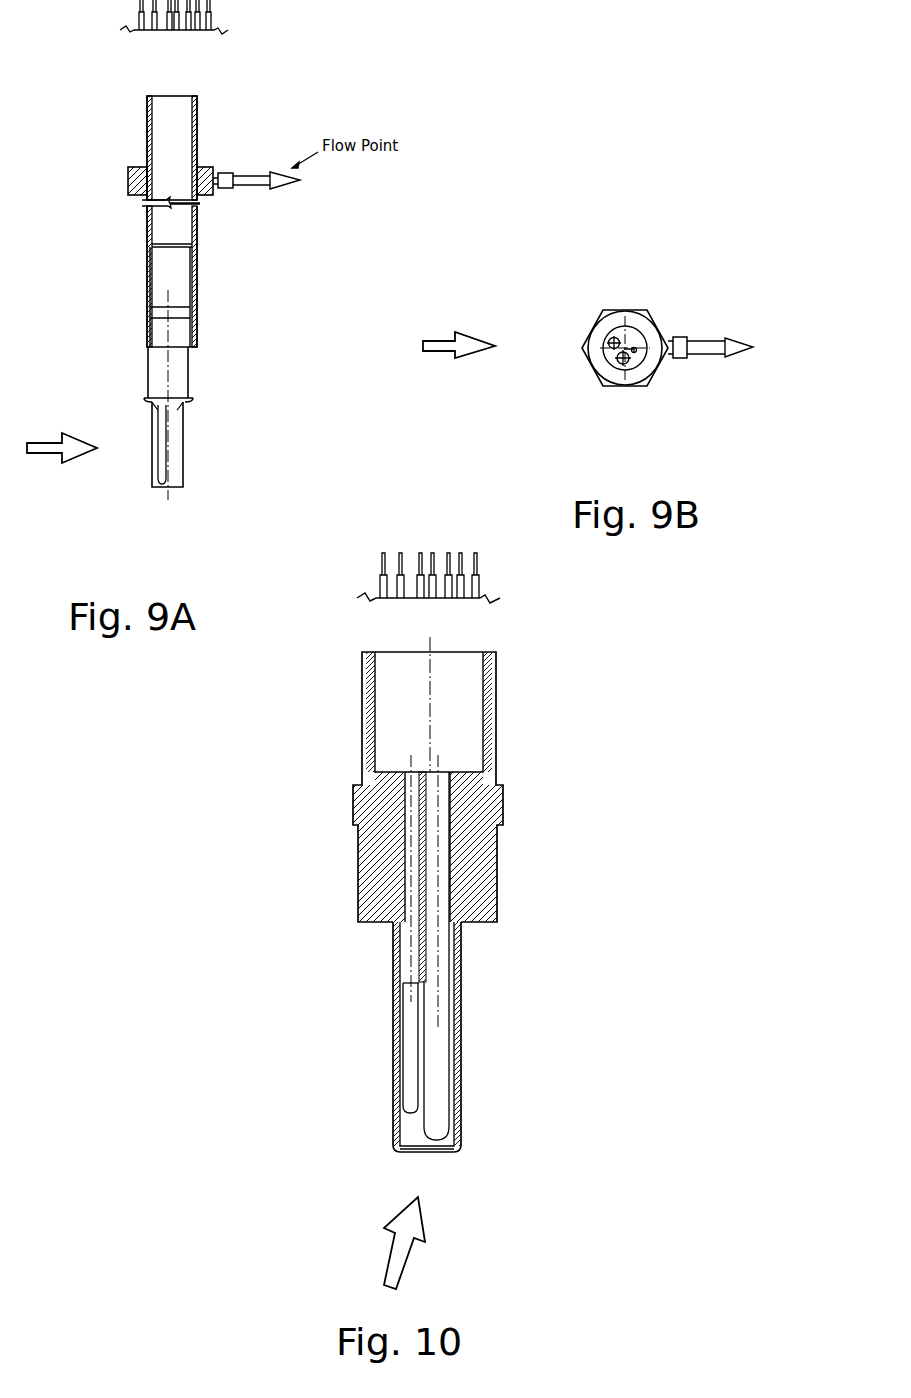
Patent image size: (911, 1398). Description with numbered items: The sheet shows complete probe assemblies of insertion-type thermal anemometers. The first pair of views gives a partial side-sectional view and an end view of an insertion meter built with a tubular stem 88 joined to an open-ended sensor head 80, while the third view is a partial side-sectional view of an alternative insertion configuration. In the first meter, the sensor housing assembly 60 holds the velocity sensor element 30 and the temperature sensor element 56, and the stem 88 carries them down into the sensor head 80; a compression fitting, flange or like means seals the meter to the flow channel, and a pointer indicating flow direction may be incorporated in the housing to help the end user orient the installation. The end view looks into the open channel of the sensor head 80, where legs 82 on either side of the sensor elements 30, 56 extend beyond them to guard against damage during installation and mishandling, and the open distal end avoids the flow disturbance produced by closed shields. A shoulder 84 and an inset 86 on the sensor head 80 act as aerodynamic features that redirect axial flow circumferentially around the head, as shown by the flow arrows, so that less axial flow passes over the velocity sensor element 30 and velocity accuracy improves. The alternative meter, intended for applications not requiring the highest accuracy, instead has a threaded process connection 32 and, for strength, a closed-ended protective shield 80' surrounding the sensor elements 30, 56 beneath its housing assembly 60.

In FIG. 9A, the tubular stem 88 is at (197, 224).
In FIG. 9A, the sensor housing assembly 60 is at (196, 291).
In FIG. 10, the sensor housing assembly 60 is at (470, 722).
In FIG. 9A, the inset 86 is at (148, 370).
In FIG. 9A, the shoulder 84 is at (143, 398).
In FIG. 9A, the velocity sensor element 30 is at (160, 437).
In FIG. 9B, the velocity sensor element 30 is at (610, 341).
In FIG. 10, the velocity sensor element 30 is at (449, 1078).
In FIG. 9A, the sensor head 80 is at (201, 444).
In FIG. 9B, the sensor head 80 is at (667, 328).
In FIG. 9B, the legs 82 is at (628, 327).
In FIG. 9B, the temperature sensor element 56 is at (617, 358).
In FIG. 10, the temperature sensor element 56 is at (393, 1047).
In FIG. 10, the threaded process connection 32 is at (498, 882).
In FIG. 10, the closed-ended protective shield 80' is at (393, 1061).